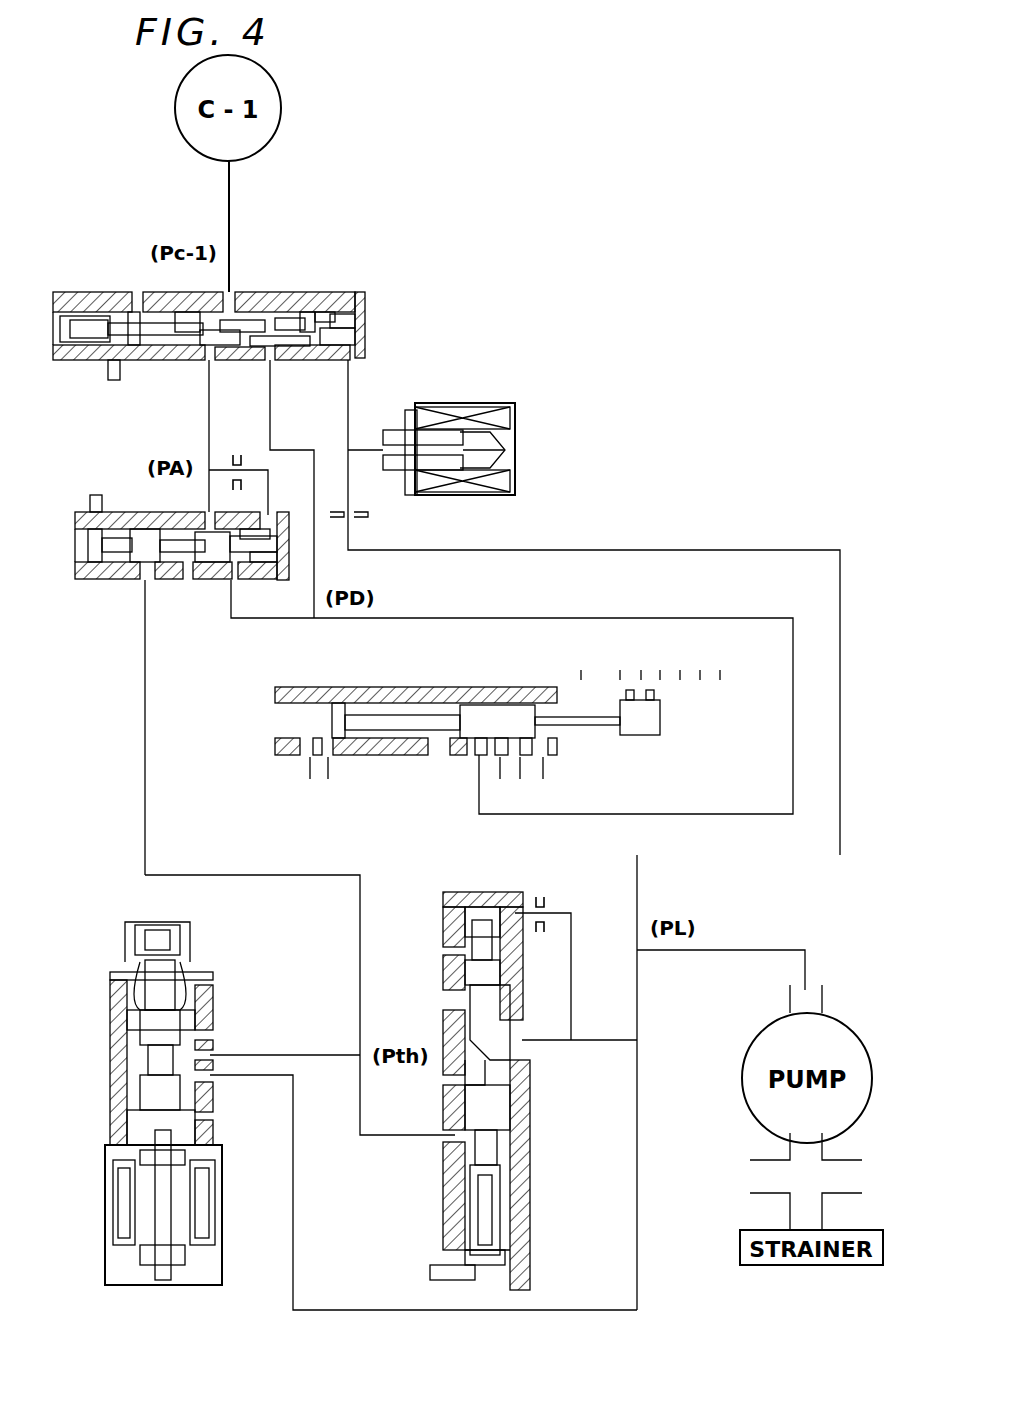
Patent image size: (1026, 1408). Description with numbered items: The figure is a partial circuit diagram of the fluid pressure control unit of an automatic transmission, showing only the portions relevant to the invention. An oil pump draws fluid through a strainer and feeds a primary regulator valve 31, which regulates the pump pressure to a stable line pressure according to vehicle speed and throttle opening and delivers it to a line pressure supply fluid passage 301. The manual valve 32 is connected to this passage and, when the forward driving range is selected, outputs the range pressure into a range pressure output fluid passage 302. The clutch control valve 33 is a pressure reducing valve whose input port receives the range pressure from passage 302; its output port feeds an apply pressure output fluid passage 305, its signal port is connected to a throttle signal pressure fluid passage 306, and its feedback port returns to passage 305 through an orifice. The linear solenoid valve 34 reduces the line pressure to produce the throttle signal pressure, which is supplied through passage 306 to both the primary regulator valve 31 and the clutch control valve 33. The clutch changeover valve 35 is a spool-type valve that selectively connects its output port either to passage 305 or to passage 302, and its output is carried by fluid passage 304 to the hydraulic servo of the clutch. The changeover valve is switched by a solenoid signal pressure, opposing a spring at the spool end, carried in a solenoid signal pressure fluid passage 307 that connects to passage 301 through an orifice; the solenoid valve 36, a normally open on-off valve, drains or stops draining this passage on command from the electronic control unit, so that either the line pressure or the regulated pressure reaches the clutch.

The fluid passage 304 is at (232, 216).
The C-1 changeover valve 35 is at (376, 300).
The solenoid signal pressure fluid passage 307 is at (349, 382).
The solenoid valve 36 is at (453, 396).
The apply pressure output fluid passage 305 is at (205, 396).
The C-1 control valve 33 is at (72, 505).
The range pressure output fluid passage 302 is at (482, 620).
The manual valve 32 is at (258, 724).
The throttle signal pressure fluid passage 306 is at (325, 875).
The linear solenoid valve 34 is at (228, 967).
The line pressure supply fluid passage 301 is at (640, 1008).
The primary regulator valve 31 is at (538, 1212).